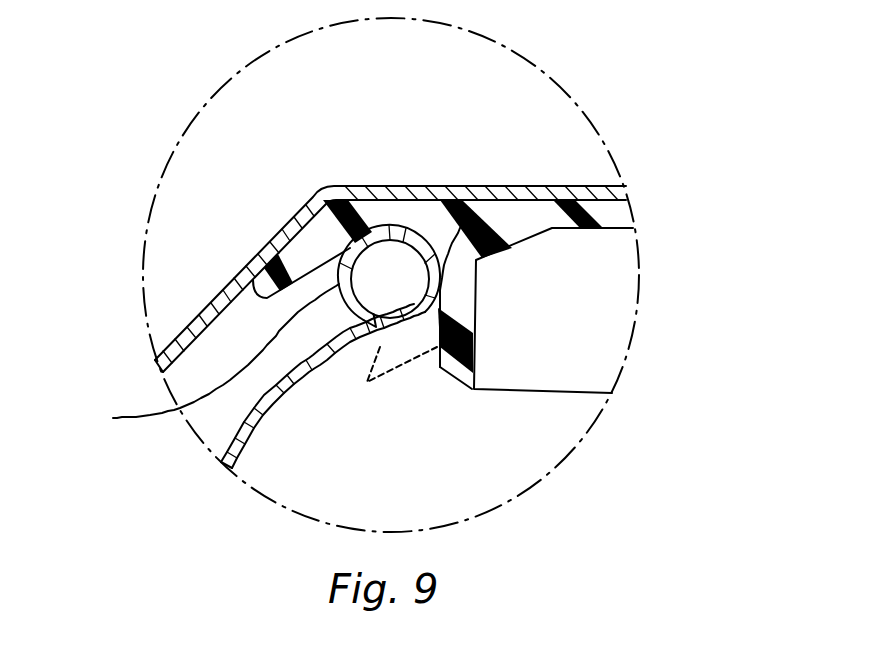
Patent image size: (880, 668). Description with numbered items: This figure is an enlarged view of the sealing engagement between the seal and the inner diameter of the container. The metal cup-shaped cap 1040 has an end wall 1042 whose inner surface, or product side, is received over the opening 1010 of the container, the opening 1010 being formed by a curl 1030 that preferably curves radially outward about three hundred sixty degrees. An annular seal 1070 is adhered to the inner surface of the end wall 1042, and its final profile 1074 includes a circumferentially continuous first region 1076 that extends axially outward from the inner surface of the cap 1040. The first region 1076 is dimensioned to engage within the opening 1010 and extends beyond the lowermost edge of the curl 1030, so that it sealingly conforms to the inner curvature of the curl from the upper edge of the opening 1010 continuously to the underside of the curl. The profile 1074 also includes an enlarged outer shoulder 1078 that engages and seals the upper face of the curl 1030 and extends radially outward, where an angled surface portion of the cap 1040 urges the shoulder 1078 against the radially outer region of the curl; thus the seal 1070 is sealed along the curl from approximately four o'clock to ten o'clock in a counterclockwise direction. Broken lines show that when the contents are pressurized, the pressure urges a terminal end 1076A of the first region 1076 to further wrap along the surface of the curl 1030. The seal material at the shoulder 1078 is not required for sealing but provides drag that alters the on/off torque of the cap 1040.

The opening 1010 is at (470, 207).
The curl 1030 is at (204, 358).
The cap 1040 is at (212, 304).
The end wall 1042 is at (360, 186).
The annular seal 1070 is at (655, 179).
The final profile 1074 is at (413, 218).
The first region 1076 is at (390, 355).
The terminal end 1076A is at (450, 368).
The outer shoulder 1078 is at (322, 241).